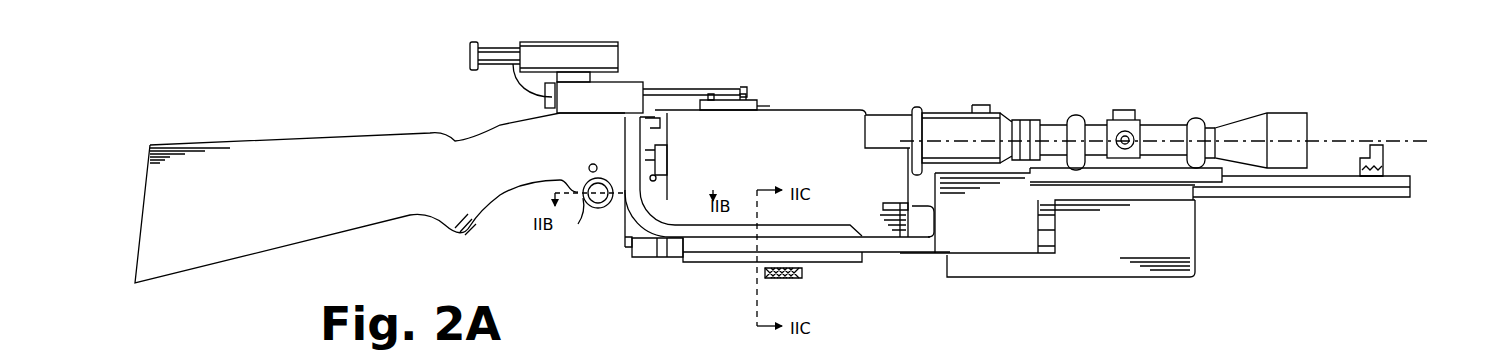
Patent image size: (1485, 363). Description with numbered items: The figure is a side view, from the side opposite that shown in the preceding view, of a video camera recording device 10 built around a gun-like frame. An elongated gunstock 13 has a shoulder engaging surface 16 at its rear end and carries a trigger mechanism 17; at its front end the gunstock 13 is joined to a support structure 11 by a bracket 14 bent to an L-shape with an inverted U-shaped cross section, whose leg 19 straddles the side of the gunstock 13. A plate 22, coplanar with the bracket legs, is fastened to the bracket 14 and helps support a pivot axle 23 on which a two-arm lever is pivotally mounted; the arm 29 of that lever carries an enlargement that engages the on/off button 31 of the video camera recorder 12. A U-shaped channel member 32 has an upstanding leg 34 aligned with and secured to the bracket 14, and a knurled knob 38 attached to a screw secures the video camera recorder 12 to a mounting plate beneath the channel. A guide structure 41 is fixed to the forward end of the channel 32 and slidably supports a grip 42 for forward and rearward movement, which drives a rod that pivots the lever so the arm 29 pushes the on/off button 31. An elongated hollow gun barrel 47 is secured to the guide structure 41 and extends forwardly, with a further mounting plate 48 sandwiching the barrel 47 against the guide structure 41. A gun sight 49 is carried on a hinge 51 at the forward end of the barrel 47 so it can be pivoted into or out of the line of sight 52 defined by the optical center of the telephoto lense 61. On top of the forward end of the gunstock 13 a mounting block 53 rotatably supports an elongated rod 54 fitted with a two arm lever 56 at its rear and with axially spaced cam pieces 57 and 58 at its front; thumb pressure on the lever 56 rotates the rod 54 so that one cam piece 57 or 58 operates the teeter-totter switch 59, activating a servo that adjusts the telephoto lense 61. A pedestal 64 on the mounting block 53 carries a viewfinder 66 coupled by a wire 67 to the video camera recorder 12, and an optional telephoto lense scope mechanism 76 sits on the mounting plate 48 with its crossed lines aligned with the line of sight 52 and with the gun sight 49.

The video camera recording device 10 is at (640, 268).
The support structure 11 is at (688, 268).
The video camera recorder 12 is at (818, 108).
The gunstock 13 is at (346, 236).
The bracket 14 is at (627, 228).
The shoulder engaging surface 16 is at (148, 165).
The trigger mechanism 17 is at (582, 208).
The leg 19 is at (635, 154).
The plate 22 is at (668, 163).
The pivot axle 23 is at (657, 176).
The arm 29 is at (673, 132).
The on/off button 31 is at (662, 152).
The U-shaped channel member 32 is at (882, 256).
The leg 34 is at (823, 250).
The knurled knob 38 is at (762, 281).
The guide structure 41 is at (992, 259).
The grip 42 is at (1135, 280).
The gun barrel 47 is at (1288, 190).
The mounting plate 48 is at (1193, 178).
The gun sight 49 is at (1384, 152).
The hinge 51 is at (1384, 168).
The line of sight 52 is at (1400, 143).
The mounting block 53 is at (636, 80).
The rod 54 is at (679, 87).
The two arm lever 56 is at (547, 103).
The cam piece 57 is at (712, 94).
The cam piece 58 is at (746, 94).
The teeter-totter switch 59 is at (760, 103).
The telephoto lense 61 is at (893, 126).
The pedestal 64 is at (585, 78).
The viewfinder 66 is at (562, 52).
The wire 67 is at (575, 101).
The telephoto lense scope mechanism 76 is at (1100, 118).